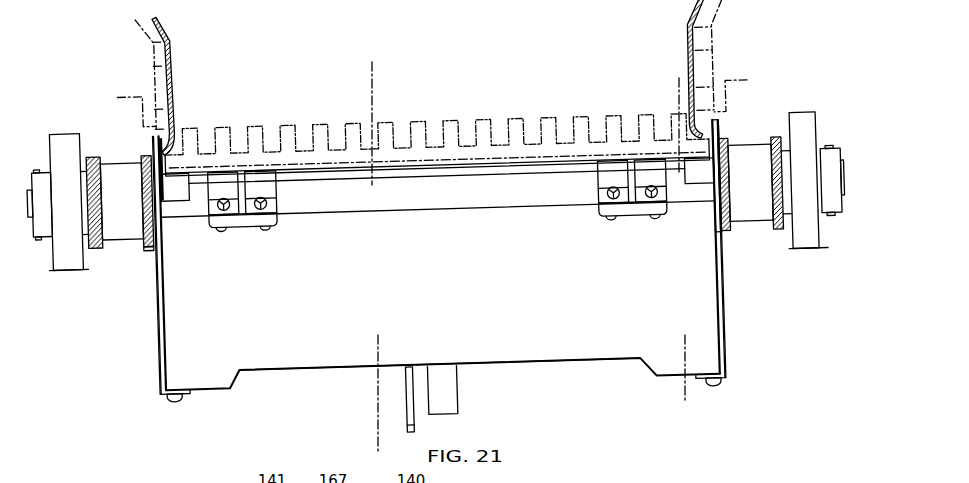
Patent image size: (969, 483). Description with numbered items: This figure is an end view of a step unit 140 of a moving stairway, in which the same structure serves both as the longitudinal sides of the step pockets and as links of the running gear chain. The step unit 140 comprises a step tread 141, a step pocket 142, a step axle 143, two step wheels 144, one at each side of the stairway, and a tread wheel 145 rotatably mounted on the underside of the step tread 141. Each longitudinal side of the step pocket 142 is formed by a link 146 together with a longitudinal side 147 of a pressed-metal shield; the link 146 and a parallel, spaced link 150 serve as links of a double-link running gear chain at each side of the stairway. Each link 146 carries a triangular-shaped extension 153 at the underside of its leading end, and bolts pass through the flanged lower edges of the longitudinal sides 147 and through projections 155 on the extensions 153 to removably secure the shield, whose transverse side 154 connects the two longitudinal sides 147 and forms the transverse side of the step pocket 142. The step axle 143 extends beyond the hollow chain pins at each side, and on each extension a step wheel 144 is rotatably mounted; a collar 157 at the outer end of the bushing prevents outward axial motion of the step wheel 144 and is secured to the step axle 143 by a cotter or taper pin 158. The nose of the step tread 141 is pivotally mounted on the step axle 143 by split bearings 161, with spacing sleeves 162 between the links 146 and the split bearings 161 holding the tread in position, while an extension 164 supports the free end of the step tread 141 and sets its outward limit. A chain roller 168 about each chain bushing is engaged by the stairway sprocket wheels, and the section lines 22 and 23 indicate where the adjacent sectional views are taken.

The step unit 140 is at (406, 101).
The step tread 141 is at (258, 126).
The step pocket 142 is at (327, 296).
The step axle 143 is at (378, 210).
The step wheel 144 is at (68, 133).
The tread wheel 145 is at (152, 255).
The link 146 is at (725, 235).
The longitudinal side of shield 147 is at (163, 297).
The link 150 is at (103, 251).
The triangular-shaped extension 153 is at (157, 343).
The transverse side of shield 154 is at (312, 368).
The projection 155 is at (170, 401).
The collar 157 is at (33, 172).
The cotter or taper pin 158 is at (40, 237).
The split bearing 161 is at (243, 227).
The spacing sleeve 162 is at (182, 220).
The extension 164 is at (404, 408).
The chain roller 168 is at (117, 163).
The section line 22- 22 is at (372, 69).
The section line 23- 23 is at (686, 78).